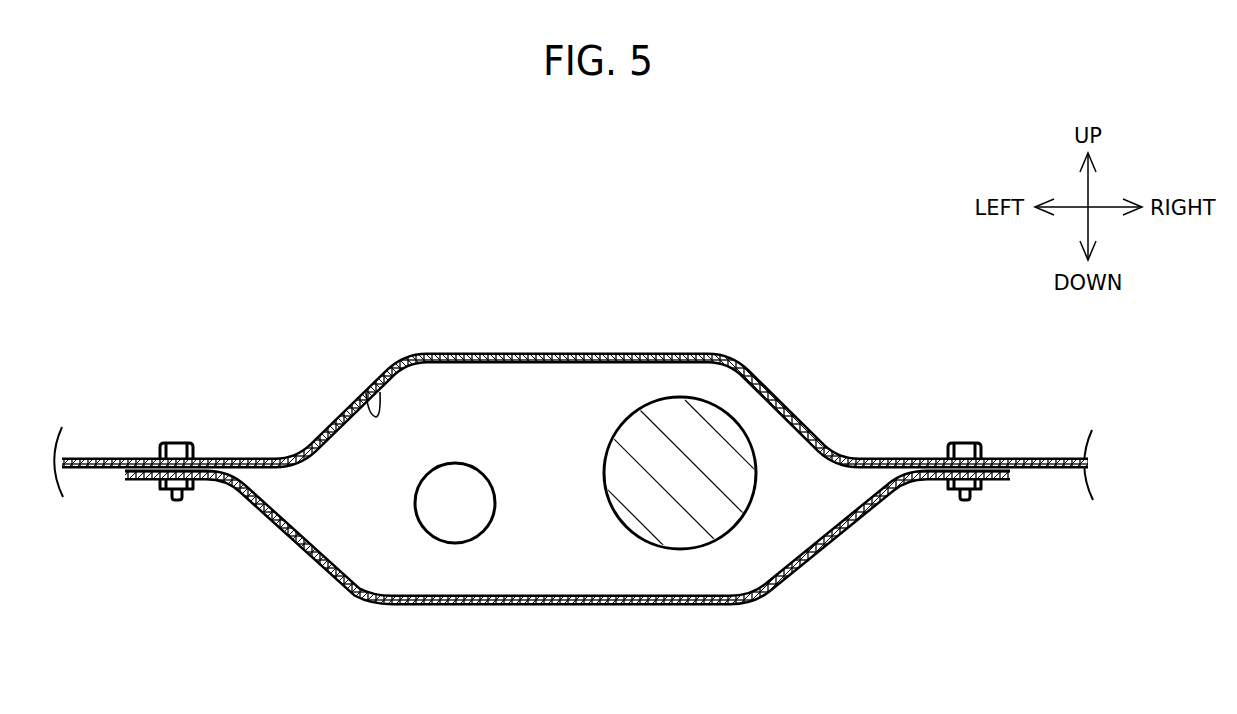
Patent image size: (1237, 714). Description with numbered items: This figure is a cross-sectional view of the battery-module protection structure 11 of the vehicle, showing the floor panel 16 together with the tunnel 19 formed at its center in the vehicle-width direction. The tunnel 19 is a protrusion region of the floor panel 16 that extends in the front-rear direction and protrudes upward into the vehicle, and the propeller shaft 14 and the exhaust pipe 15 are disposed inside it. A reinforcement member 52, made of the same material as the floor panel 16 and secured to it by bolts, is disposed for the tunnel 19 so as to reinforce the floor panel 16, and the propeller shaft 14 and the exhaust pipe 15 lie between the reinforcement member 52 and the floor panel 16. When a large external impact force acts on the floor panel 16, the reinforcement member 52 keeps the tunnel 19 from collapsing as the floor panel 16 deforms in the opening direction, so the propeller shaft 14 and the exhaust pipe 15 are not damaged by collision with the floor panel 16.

The bracket assembly 11 is at (588, 286).
The propeller shaft 14 is at (682, 527).
The exhaust pipe 15 is at (447, 530).
The floor panel 16 is at (801, 418).
The tunnel 19 is at (360, 402).
The reinforcement member 52 is at (545, 606).